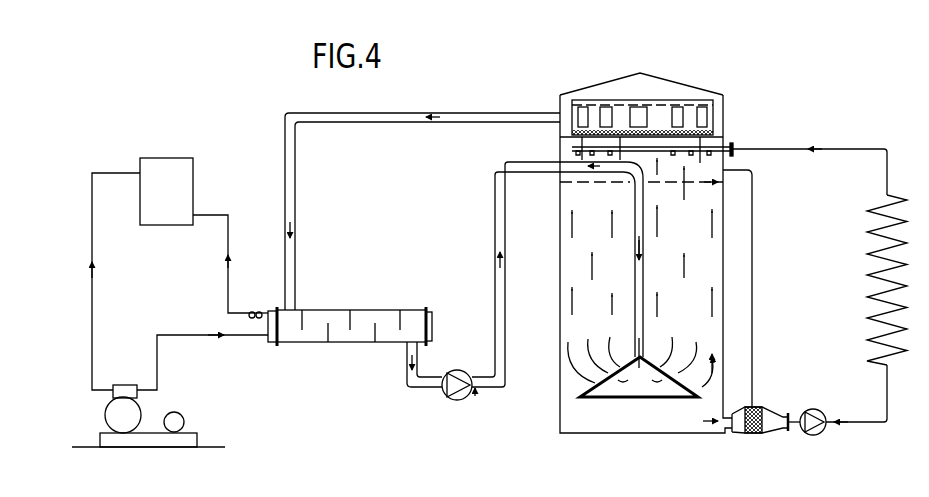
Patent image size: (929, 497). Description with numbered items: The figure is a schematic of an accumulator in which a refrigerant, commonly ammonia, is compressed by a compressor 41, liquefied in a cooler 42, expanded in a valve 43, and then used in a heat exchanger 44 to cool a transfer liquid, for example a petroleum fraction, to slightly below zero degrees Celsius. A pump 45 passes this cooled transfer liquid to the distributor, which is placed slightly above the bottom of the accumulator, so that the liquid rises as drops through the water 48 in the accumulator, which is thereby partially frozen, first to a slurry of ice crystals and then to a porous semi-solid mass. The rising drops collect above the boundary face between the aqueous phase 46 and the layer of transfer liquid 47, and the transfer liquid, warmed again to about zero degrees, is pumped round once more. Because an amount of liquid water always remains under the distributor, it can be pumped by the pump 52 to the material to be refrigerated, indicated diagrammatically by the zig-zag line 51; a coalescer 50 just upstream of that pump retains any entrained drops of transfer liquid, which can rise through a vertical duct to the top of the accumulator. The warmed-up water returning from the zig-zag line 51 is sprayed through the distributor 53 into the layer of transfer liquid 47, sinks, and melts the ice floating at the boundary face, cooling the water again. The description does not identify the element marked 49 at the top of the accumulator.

The compressor 41 is at (146, 418).
The cooler 42 is at (172, 168).
The valve 43 is at (254, 308).
The heat exchanger 44 is at (362, 310).
The pump 45 is at (458, 369).
The aqueous phase 46 is at (672, 88).
The layer of transfer liquid 47 is at (707, 165).
The water 48 is at (708, 256).
The lamp panel 49 is at (655, 113).
The coalescer 50 is at (763, 406).
The zig-zag line 51 is at (880, 303).
The pump 52 is at (815, 409).
The distributor 53 is at (706, 141).